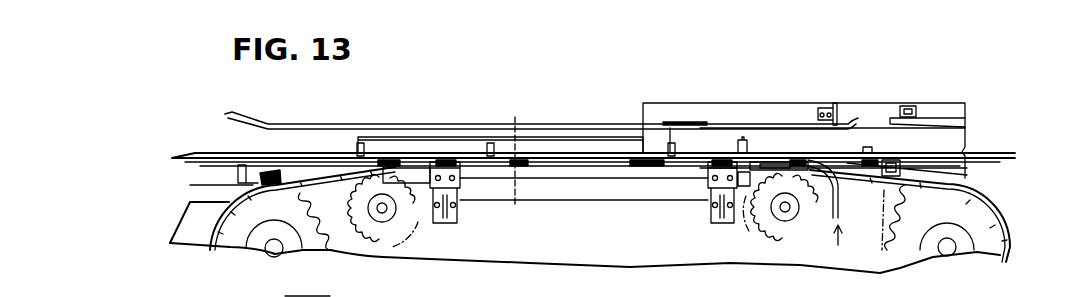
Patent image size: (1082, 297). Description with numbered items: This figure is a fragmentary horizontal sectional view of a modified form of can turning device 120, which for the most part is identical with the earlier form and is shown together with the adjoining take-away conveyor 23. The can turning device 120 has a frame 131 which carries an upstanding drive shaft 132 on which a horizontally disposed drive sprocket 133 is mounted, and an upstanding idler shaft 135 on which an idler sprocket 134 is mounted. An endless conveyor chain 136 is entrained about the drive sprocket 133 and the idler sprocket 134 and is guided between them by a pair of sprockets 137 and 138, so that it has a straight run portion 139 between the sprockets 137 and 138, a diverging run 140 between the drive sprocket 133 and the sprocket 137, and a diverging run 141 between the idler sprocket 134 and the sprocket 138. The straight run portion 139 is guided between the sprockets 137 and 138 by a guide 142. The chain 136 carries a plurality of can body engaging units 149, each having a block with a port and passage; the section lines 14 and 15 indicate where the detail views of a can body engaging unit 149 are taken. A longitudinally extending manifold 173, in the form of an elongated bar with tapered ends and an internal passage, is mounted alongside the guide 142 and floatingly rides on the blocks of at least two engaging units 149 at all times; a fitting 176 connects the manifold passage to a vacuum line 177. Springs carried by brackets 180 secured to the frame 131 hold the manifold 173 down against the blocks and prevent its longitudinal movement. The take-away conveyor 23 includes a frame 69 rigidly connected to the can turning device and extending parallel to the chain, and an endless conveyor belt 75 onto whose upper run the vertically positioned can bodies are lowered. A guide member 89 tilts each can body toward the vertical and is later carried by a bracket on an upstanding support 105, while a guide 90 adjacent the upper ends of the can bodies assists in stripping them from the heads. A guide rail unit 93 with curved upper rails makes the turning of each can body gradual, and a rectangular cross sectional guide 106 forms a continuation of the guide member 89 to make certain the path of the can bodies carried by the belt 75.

The section line 14 is at (506, 196).
The section line 15 is at (324, 292).
The take-away conveyor 23 is at (940, 93).
The frame 69 is at (764, 105).
The endless conveyor belt 75 is at (966, 142).
The guide member 89 is at (302, 125).
The guide 90 is at (200, 155).
The guide rail unit 93 is at (452, 131).
The upstanding support 105 is at (828, 103).
The rectangular cross sectional guide 106 is at (952, 120).
The can turning device 120 is at (602, 264).
The frame 131 is at (180, 205).
The drive shaft 132 is at (947, 250).
The drive sprocket 133 is at (980, 213).
The idler sprocket 134 is at (317, 240).
The idler shaft 135 is at (276, 251).
The endless conveyor chain 136 is at (1010, 252).
The sprocket 137 is at (767, 225).
The sprocket 138 is at (397, 222).
The straight run portion 139 is at (762, 164).
The diverging run 140 is at (955, 182).
The diverging run 141 is at (345, 183).
The guide 142 is at (660, 180).
The can body engaging unit 149 is at (236, 177).
The manifold 173 is at (570, 166).
The fitting 176 is at (813, 158).
The vacuum line 177 is at (839, 211).
The brackets 180 is at (455, 222).